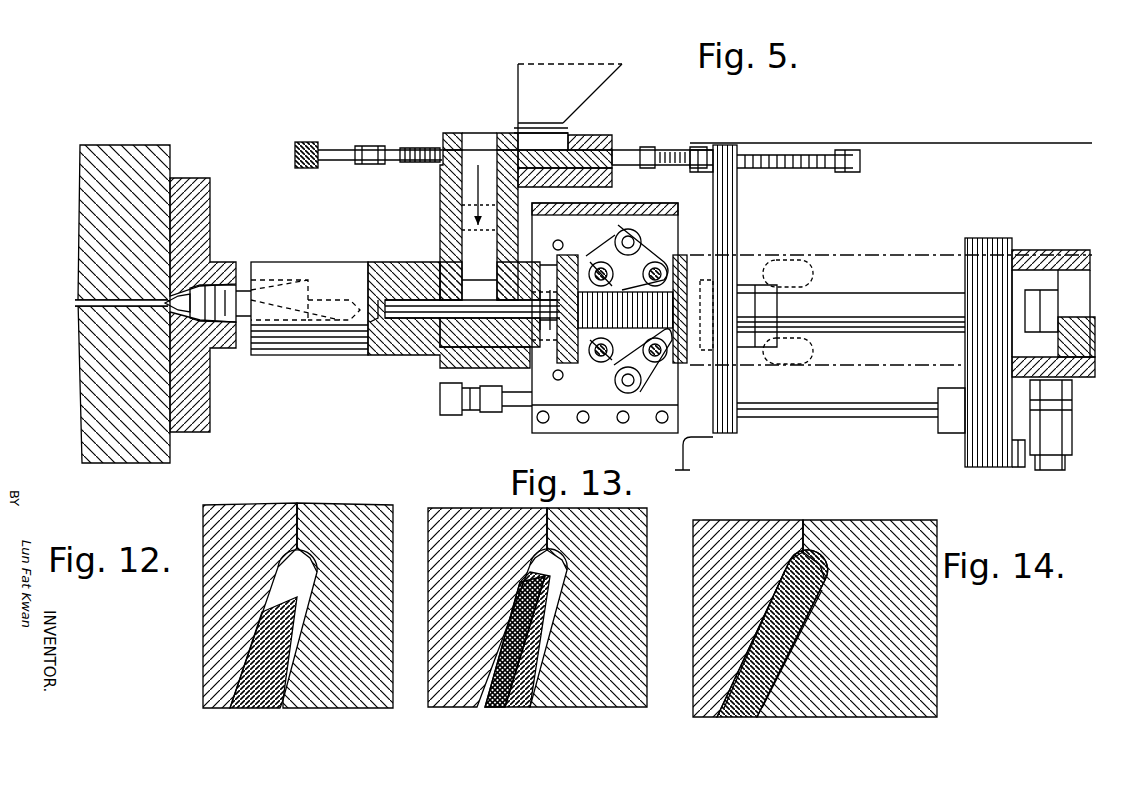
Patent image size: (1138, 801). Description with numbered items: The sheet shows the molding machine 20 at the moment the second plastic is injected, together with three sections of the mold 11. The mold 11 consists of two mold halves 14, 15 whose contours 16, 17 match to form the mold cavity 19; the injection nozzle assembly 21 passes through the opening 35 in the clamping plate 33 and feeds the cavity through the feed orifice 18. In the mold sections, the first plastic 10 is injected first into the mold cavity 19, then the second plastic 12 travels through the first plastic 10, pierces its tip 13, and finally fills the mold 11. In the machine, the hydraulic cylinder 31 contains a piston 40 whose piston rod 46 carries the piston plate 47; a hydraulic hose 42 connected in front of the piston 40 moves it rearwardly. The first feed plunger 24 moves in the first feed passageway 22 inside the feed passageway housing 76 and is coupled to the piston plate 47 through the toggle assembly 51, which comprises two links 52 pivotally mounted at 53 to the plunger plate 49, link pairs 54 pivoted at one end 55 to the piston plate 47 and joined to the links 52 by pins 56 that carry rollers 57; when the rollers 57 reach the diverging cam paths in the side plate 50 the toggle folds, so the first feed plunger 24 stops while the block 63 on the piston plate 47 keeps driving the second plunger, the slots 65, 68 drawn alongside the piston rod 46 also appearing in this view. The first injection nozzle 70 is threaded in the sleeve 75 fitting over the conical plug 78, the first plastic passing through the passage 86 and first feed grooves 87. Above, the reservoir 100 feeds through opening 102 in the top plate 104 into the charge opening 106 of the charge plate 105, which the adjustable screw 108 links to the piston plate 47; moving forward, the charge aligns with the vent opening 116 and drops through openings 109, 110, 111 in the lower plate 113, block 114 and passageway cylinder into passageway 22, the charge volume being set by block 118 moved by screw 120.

In FIG. 12, the first plastic 10 is at (246, 706).
In FIG. 13, the first plastic 10 is at (526, 700).
In FIG. 14, the first plastic 10 is at (722, 718).
In FIG. 5, the mold 11 is at (125, 132).
In FIG. 12, the mold 11 is at (314, 500).
In FIG. 13, the mold 11 is at (503, 500).
In FIG. 14, the mold 11 is at (872, 510).
In FIG. 13, the second plastic 12 is at (538, 568).
In FIG. 14, the second plastic 12 is at (797, 568).
In FIG. 13, the tip 13 is at (580, 552).
In FIG. 5, the mold half 14 is at (150, 160).
In FIG. 12, the mold half 14 is at (342, 508).
In FIG. 13, the mold half 14 is at (632, 534).
In FIG. 14, the mold half 14 is at (862, 617).
In FIG. 12, the mold half 15 is at (238, 508).
In FIG. 13, the mold half 15 is at (456, 522).
In FIG. 14, the mold half 15 is at (750, 532).
In FIG. 12, the contour 16 is at (318, 570).
In FIG. 13, the contour 16 is at (565, 576).
In FIG. 14, the contour 16 is at (826, 584).
In FIG. 12, the contour 17 is at (273, 582).
In FIG. 13, the contour 17 is at (545, 552).
In FIG. 14, the contour 17 is at (766, 594).
In FIG. 5, the feed orifice 18 is at (88, 302).
In FIG. 12, the mold cavity 19 is at (292, 570).
In FIG. 13, the mold cavity 19 is at (560, 583).
In FIG. 5, the molding machine 20 is at (940, 136).
In FIG. 5, the injection nozzle assembly 21 is at (242, 262).
In FIG. 5, the first feed passageway 22 is at (390, 285).
In FIG. 5, the first feed plunger 24 is at (424, 312).
In FIG. 5, the hydraulic cylinder 31 is at (1036, 250).
In FIG. 5, the clamping plate 33 is at (206, 178).
In FIG. 5, the opening 35 is at (215, 350).
In FIG. 5, the piston 40 is at (1074, 322).
In FIG. 5, the hydraulic hose 42 is at (1065, 460).
In FIG. 5, the piston rod 46 is at (860, 300).
In FIG. 5, the piston plate 47 is at (738, 207).
In FIG. 5, the plunger plate 49 is at (556, 272).
In FIG. 5, the side plate 50 is at (680, 216).
In FIG. 5, the toggle assembly 51 is at (672, 240).
In FIG. 5, the link 52 is at (616, 236).
In FIG. 5, the pivot 53 is at (600, 264).
In FIG. 5, the link arm 54 is at (661, 252).
In FIG. 5, the pivot end 55 is at (668, 266).
In FIG. 5, the pin 56 is at (628, 230).
In FIG. 5, the roller 57 is at (640, 256).
In FIG. 5, the block 63 is at (668, 306).
In FIG. 5, the slot 65 is at (798, 266).
In FIG. 5, the slot 68 is at (812, 360).
In FIG. 5, the first injection nozzle 70 is at (166, 297).
In FIG. 5, the sleeve 75 is at (262, 300).
In FIG. 5, the feed passageway housing 76 is at (320, 300).
In FIG. 5, the plug 78 is at (290, 312).
In FIG. 5, the passage 86 is at (338, 322).
In FIG. 5, the first feed groove 87 is at (380, 320).
In FIG. 5, the reservoir 100 is at (594, 72).
In FIG. 5, the opening 102 is at (566, 145).
In FIG. 5, the top plate 104 is at (614, 148).
In FIG. 5, the charge plate 105 is at (508, 135).
In FIG. 5, the charge opening 106 is at (468, 140).
In FIG. 5, the adjustable screw 108 is at (796, 156).
In FIG. 5, the opening 109 is at (462, 196).
In FIG. 5, the opening 110 is at (475, 228).
In FIG. 5, the opening 111 is at (475, 288).
In FIG. 5, the lower plate 113 is at (560, 182).
In FIG. 5, the block 114 is at (462, 210).
In FIG. 5, the vent opening 116 is at (448, 133).
In FIG. 5, the block 118 is at (416, 150).
In FIG. 5, the screw 120 is at (358, 152).